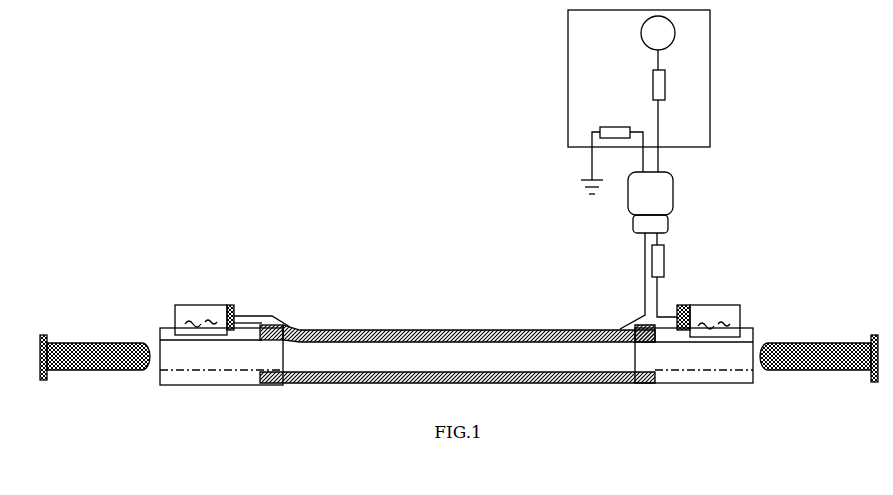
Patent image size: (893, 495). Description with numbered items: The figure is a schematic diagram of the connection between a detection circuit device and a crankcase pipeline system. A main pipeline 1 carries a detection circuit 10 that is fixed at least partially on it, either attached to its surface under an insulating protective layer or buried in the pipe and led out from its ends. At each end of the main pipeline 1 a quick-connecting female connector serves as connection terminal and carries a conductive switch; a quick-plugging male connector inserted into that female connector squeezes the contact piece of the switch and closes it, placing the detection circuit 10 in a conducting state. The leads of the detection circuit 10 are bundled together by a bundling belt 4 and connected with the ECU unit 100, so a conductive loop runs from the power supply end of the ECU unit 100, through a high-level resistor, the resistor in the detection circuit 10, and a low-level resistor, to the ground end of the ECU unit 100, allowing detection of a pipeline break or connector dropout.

The main pipeline 1 is at (427, 350).
The bundling belt 4 is at (658, 196).
The detection circuit 10 is at (641, 282).
The ECU unit 100 is at (697, 103).